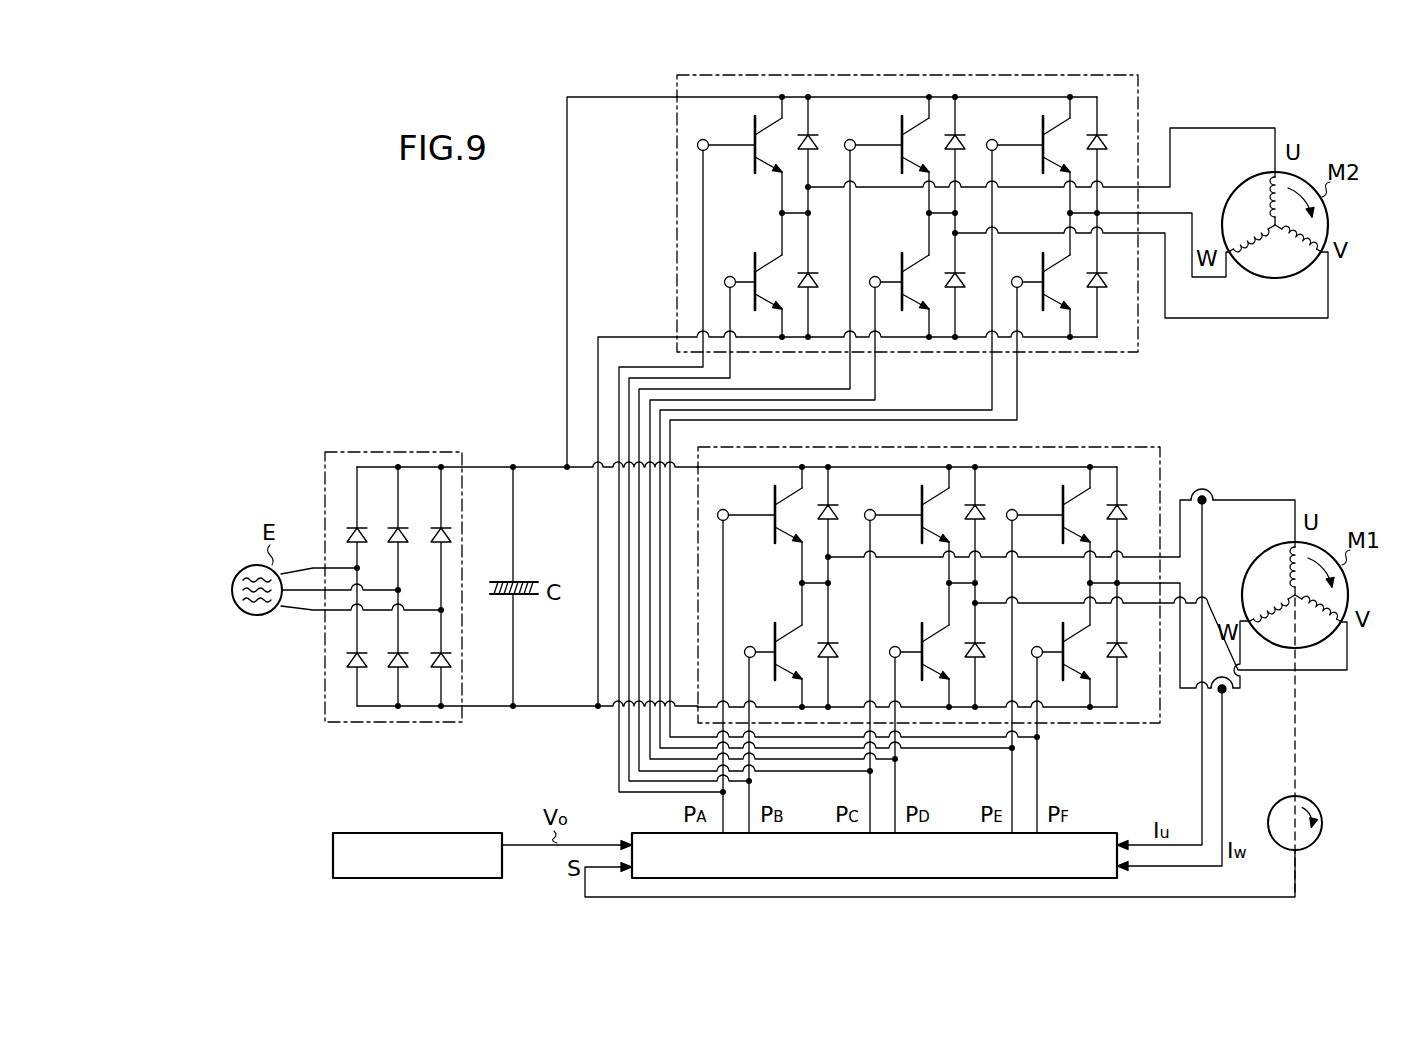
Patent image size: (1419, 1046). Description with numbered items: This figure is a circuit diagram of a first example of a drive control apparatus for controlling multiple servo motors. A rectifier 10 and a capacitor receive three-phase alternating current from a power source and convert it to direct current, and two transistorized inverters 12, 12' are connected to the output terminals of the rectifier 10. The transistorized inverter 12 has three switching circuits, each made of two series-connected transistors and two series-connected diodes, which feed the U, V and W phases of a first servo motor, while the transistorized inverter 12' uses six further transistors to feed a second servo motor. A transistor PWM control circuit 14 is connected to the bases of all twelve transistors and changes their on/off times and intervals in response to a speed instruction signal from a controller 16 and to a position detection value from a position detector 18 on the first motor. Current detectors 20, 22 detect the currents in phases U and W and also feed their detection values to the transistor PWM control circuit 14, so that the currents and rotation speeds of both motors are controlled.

The rectifier 10 is at (452, 452).
The transistorized inverter 12 is at (956, 585).
The transistorized inverter 12' is at (939, 213).
The transistor PWM control circuit 14 is at (1095, 833).
The controller 16 is at (496, 833).
The position detector 18 is at (1276, 809).
The current detector 20 is at (1206, 506).
The current detector 22 is at (1226, 695).